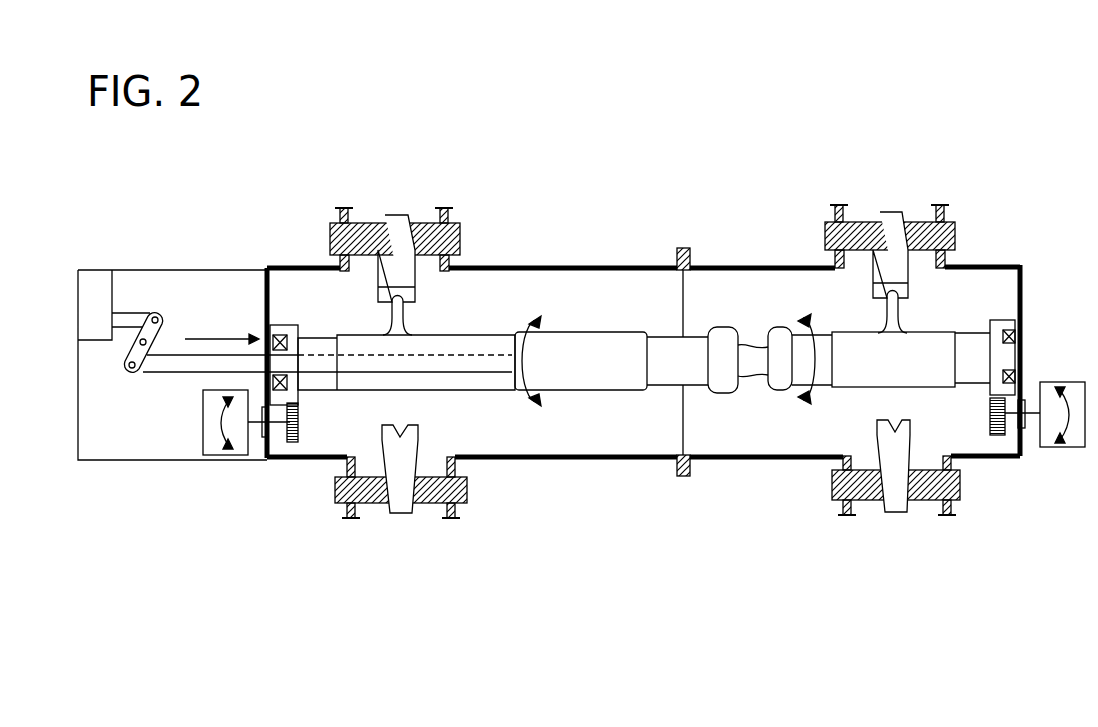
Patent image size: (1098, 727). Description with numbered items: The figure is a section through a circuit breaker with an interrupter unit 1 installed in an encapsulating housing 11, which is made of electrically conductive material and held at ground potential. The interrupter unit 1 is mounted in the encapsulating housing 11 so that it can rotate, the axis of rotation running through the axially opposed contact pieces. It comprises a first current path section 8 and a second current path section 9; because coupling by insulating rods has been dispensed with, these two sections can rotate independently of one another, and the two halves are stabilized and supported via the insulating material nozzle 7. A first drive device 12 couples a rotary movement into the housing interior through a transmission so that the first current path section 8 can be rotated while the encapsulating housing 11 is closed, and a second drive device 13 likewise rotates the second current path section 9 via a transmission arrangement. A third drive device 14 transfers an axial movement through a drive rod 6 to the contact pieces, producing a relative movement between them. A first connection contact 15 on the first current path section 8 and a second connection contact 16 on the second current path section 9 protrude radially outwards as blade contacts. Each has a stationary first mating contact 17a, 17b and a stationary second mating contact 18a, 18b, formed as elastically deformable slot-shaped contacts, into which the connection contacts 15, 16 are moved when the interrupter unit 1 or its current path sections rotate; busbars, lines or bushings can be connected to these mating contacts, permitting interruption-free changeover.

The interrupter unit 1 is at (592, 400).
The drive rod 6 is at (443, 373).
The insulating material nozzle 7 is at (747, 375).
The first current path section 8 is at (487, 382).
The second current path section 9 is at (857, 378).
The encapsulating housing 11 is at (723, 264).
The first drive device 12 is at (213, 448).
The second drive device 13 is at (1052, 448).
The third drive device 14 is at (105, 268).
The first connection contact 15 is at (390, 320).
The second connection contact 16 is at (893, 316).
The stationary first mating contact 17a is at (408, 277).
The stationary first mating contact 17b is at (880, 272).
The stationary second mating contact 18a is at (385, 450).
The stationary second mating contact 18b is at (907, 445).